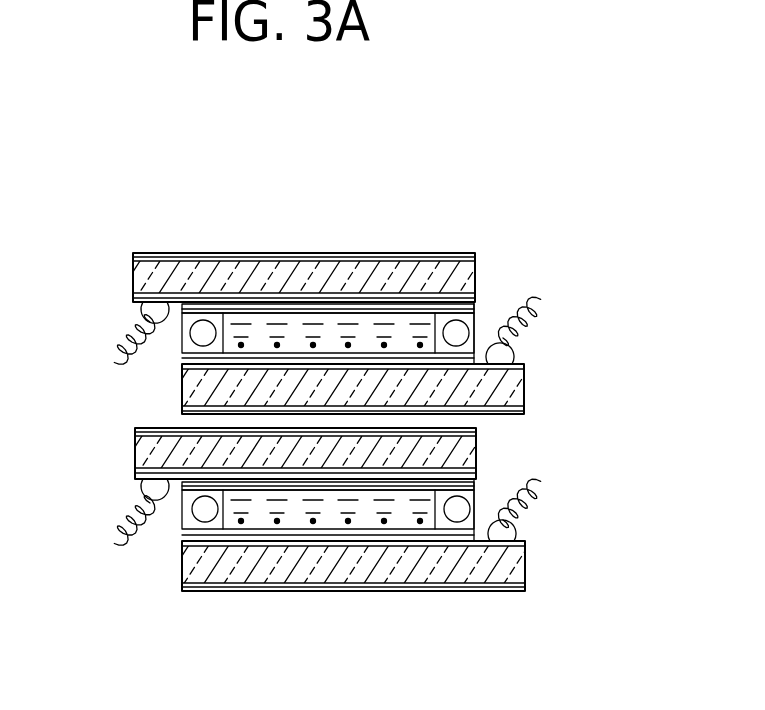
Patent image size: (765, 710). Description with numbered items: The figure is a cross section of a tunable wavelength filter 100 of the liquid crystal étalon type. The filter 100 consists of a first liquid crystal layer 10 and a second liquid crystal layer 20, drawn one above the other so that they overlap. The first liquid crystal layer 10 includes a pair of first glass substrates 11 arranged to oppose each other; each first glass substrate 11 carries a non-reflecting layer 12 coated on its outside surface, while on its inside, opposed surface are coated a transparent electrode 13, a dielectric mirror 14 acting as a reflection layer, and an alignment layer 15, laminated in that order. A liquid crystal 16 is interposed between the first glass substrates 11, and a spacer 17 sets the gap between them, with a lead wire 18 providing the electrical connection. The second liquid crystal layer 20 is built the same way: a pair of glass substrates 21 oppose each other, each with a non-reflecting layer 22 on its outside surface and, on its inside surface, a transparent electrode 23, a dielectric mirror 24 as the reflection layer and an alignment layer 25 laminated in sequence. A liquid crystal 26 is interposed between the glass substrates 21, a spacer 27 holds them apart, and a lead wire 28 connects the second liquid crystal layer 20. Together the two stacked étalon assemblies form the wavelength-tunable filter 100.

The tunable wavelength filter 100 is at (140, 225).
The first liquid crystal layer 10 is at (473, 240).
The first glass substrate 11 is at (257, 268).
The non-reflecting layer 12 is at (170, 256).
The transparent electrode 13 is at (315, 300).
The dielectric mirror 14 is at (370, 305).
The alignment layer 15 is at (475, 322).
The liquid crystal 16 is at (405, 330).
The spacer 17 is at (462, 329).
The lead wire 18 is at (128, 335).
The second liquid crystal layer 20 is at (556, 605).
The glass substrate 21 is at (135, 447).
The non-reflecting layer 22 is at (477, 433).
The transparent electrode 23 is at (136, 476).
The dielectric mirror 24 is at (477, 478).
The alignment layer 25 is at (477, 487).
The liquid crystal 26 is at (258, 520).
The spacer 27 is at (458, 513).
The lead wire 28 is at (138, 537).